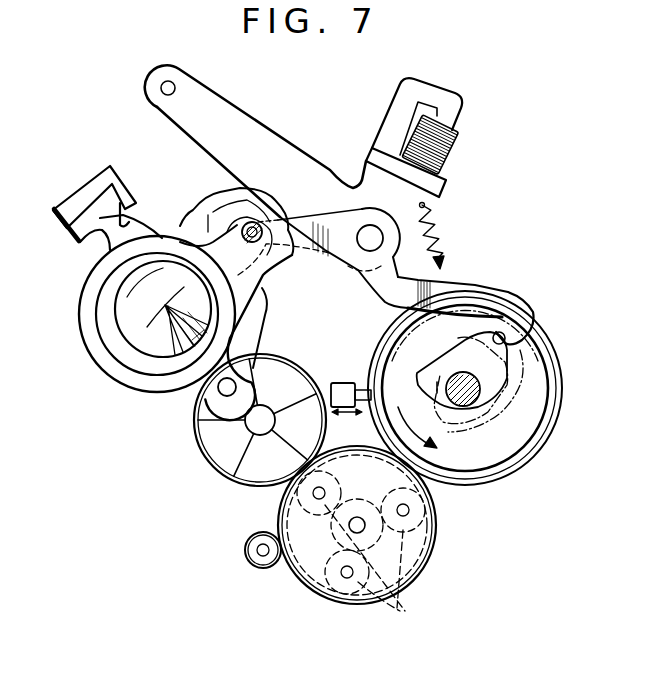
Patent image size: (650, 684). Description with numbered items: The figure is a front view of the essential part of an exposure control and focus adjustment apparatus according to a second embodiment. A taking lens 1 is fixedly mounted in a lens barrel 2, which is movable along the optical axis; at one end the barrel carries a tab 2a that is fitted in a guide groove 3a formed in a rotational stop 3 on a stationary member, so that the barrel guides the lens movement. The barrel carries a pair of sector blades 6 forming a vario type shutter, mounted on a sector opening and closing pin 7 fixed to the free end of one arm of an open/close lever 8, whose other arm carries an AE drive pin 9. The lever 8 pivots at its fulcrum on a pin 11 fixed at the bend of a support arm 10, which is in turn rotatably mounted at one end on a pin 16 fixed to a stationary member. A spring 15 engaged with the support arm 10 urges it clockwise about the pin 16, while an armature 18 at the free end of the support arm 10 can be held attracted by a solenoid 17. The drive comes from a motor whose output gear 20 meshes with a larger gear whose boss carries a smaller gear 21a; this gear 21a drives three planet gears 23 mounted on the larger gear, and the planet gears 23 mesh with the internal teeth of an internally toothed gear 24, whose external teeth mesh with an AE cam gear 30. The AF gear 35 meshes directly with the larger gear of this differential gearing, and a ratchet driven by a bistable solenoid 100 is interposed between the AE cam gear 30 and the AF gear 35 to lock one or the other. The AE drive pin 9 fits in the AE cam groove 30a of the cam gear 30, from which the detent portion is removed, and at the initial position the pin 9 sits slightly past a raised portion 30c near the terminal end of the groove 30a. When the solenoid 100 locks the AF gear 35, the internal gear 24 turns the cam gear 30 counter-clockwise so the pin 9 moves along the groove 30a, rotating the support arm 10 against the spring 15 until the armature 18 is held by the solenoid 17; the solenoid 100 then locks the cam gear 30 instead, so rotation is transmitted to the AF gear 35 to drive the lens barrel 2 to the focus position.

The taking lens 1 is at (140, 316).
The lens barrel 2 is at (83, 288).
The tab 2a is at (103, 216).
The rotational stop 3 is at (90, 184).
The guide groove 3a is at (78, 206).
The sector blades 6 is at (223, 218).
The sector opening and closing pin 7 is at (254, 226).
The open/close lever 8 is at (478, 289).
The AE drive pin 9 is at (500, 332).
The support arm 10 is at (272, 143).
The pin 11 is at (370, 238).
The spring 15 is at (438, 242).
The pin 16 is at (170, 81).
The solenoid 17 is at (432, 93).
The armature 18 is at (438, 193).
The output gear 20 is at (258, 549).
The gear of smaller diameter 21a is at (351, 503).
The planet gears 23 is at (399, 609).
The internally toothed gear 24 is at (433, 527).
The AE cam gear 30 is at (545, 418).
The AE cam groove 30a is at (518, 370).
The raised portion 30c is at (436, 376).
The AF gear 35 is at (208, 448).
The bistable solenoid 100 is at (333, 374).